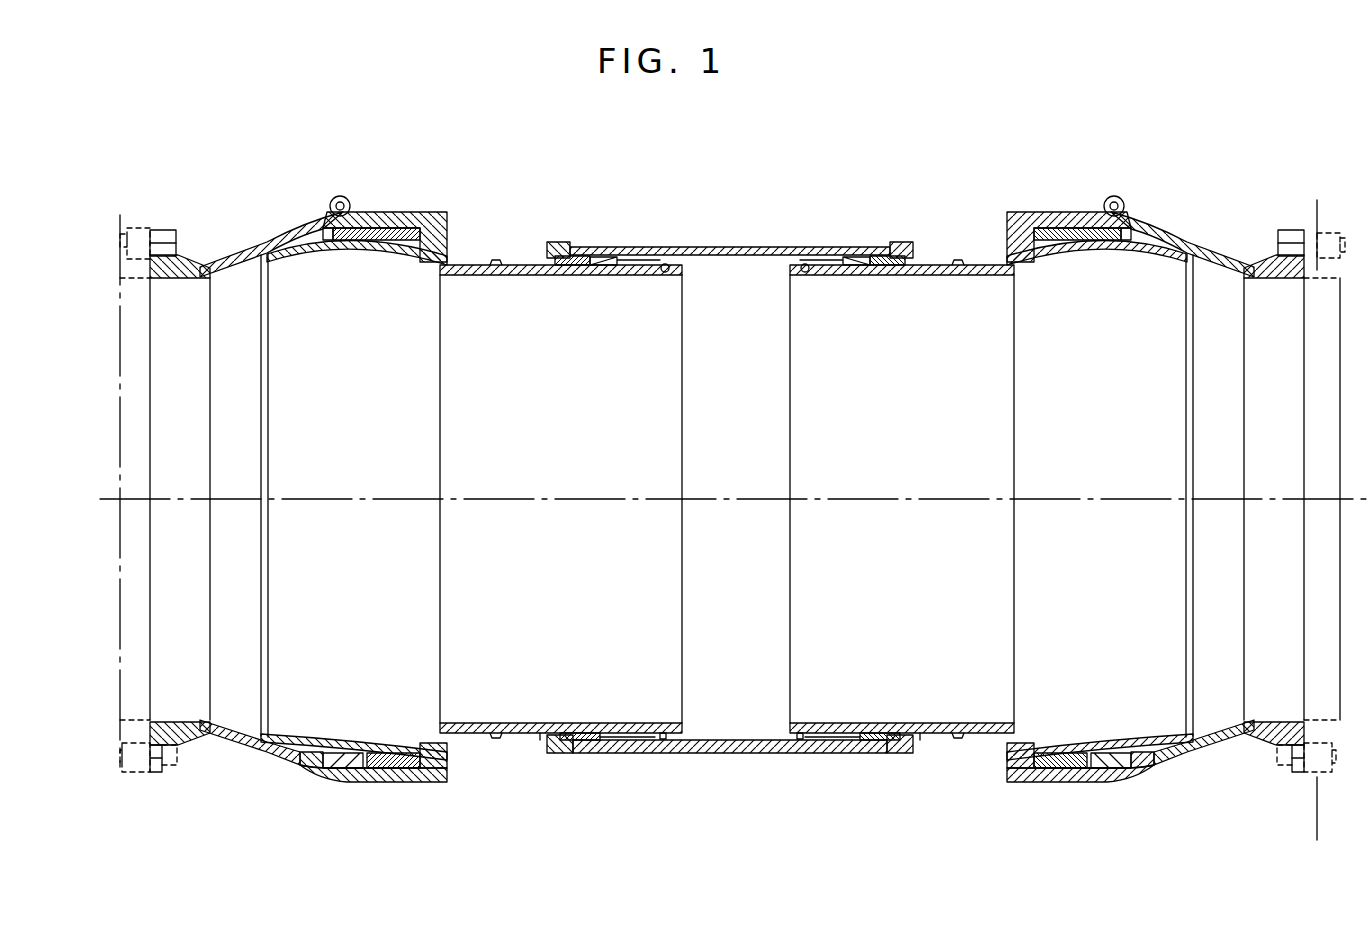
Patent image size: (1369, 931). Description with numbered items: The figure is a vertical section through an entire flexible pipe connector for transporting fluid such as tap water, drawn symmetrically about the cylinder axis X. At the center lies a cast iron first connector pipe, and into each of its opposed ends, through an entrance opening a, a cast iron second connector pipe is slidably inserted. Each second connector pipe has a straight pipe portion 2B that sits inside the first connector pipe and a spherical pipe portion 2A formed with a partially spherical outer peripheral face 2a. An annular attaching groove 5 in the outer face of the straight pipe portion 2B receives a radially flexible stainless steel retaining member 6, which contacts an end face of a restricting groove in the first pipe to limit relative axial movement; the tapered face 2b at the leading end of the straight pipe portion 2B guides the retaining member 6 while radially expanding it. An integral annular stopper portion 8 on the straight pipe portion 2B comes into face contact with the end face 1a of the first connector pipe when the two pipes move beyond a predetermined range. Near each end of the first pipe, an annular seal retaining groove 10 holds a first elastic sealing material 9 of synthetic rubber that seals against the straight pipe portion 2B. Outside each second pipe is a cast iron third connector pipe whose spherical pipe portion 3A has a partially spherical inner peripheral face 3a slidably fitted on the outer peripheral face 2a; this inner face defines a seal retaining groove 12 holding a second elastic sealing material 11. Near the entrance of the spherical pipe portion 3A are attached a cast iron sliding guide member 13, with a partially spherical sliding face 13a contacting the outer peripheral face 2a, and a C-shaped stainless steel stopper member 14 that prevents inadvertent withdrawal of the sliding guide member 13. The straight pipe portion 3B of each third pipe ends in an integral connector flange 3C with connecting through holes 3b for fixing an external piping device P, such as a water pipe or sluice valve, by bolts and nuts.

The end face of the first connector pipe 1a is at (548, 248).
The partially spherical outer peripheral face 2a is at (283, 236).
The tapered face 2b is at (725, 805).
The spherical pipe portion 2A is at (383, 247).
The straight pipe portion 2B is at (475, 268).
The partially spherical inner peripheral face 3a is at (233, 730).
The connecting through holes 3b is at (162, 240).
The spherical pipe portion of the third connector pipe 3A is at (303, 775).
The straight pipe portion of the third connector pipe 3B is at (190, 735).
The connector flange 3C is at (165, 230).
The annular attaching groove 5 is at (663, 740).
The retaining member 6 is at (665, 263).
The annular stopper portion 8 is at (497, 262).
The first elastic sealing material 9 is at (575, 753).
The annular seal retaining groove 10 is at (570, 268).
The second elastic sealing material 11 is at (340, 770).
The annular seal retaining groove 12 is at (330, 241).
The sliding guide member 13 is at (400, 782).
The partially spherical sliding face 13a is at (397, 752).
The stopper member 14 is at (442, 752).
The entrance opening a is at (536, 751).
The external piping device P is at (120, 215).
The cylinder axis X is at (500, 497).